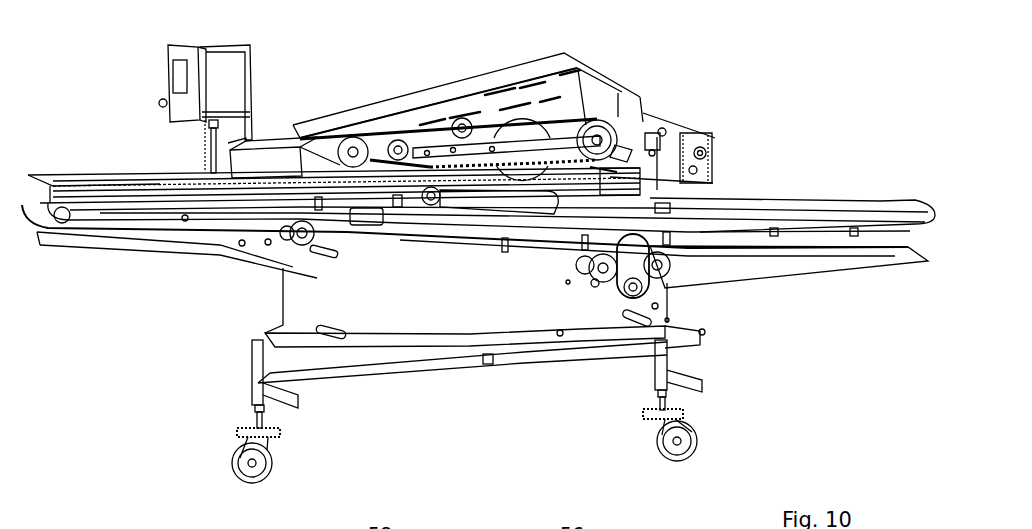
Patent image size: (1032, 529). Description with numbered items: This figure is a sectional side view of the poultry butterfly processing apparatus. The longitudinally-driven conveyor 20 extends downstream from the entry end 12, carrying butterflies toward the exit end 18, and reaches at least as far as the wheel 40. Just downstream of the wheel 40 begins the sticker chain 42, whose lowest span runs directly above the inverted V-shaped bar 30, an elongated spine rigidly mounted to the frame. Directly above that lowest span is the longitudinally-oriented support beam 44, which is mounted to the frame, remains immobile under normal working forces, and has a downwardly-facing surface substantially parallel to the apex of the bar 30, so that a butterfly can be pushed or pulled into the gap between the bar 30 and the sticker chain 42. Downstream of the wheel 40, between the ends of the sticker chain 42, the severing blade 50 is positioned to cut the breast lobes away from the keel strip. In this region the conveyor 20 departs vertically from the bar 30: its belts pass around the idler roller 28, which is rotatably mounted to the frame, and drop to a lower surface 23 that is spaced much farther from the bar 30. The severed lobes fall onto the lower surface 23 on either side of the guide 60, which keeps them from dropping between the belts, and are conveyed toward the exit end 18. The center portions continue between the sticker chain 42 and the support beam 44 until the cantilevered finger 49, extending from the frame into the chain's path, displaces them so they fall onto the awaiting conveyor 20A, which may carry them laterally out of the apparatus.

The entry end 12 is at (45, 102).
The exit end 18 is at (853, 178).
The conveyor 20 is at (148, 178).
The awaiting conveyor 20A is at (606, 176).
The lower surface 23 is at (786, 200).
The idler roller 28 is at (432, 201).
The bar 30 is at (318, 176).
The wheel 40 is at (352, 140).
The sticker chain 42 is at (417, 130).
The support beam 44 is at (490, 152).
The finger 49 is at (624, 150).
The severing blade 50 is at (525, 130).
The guide 60 is at (496, 210).